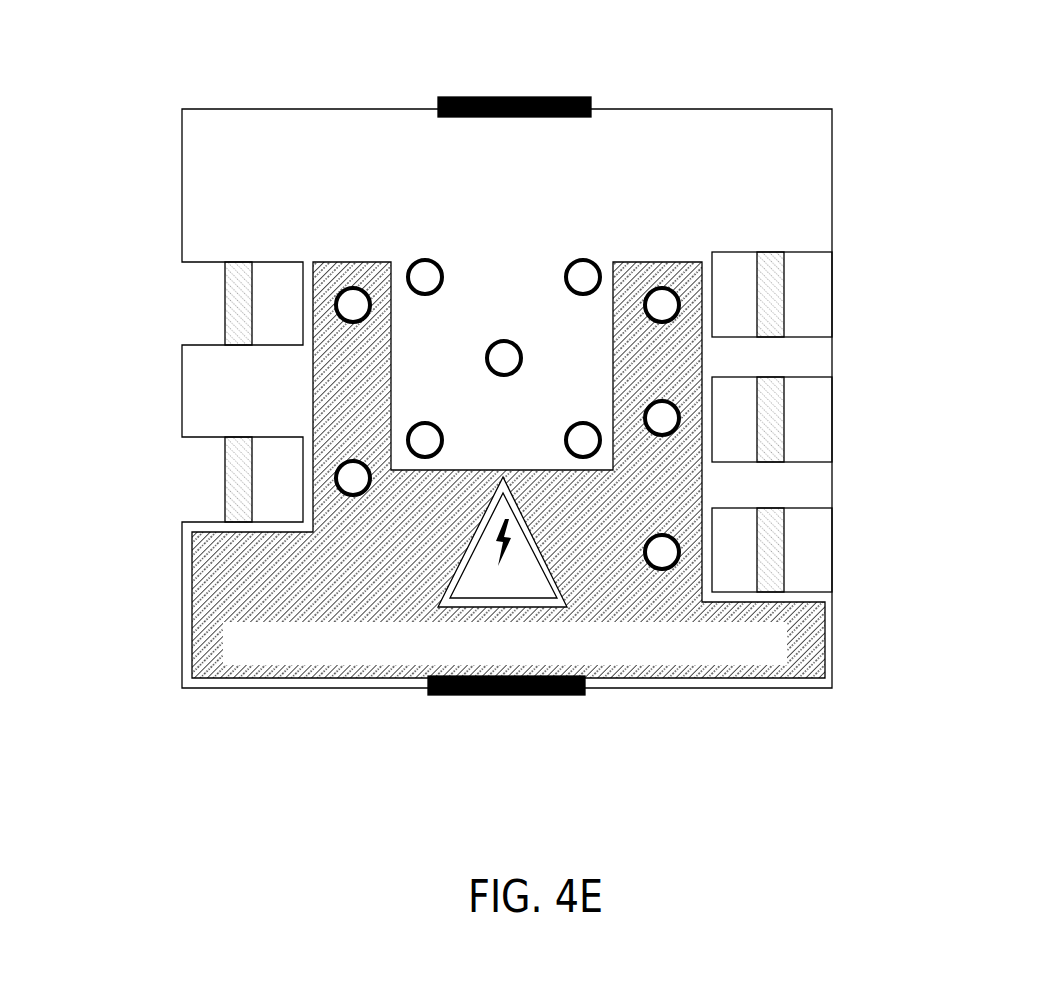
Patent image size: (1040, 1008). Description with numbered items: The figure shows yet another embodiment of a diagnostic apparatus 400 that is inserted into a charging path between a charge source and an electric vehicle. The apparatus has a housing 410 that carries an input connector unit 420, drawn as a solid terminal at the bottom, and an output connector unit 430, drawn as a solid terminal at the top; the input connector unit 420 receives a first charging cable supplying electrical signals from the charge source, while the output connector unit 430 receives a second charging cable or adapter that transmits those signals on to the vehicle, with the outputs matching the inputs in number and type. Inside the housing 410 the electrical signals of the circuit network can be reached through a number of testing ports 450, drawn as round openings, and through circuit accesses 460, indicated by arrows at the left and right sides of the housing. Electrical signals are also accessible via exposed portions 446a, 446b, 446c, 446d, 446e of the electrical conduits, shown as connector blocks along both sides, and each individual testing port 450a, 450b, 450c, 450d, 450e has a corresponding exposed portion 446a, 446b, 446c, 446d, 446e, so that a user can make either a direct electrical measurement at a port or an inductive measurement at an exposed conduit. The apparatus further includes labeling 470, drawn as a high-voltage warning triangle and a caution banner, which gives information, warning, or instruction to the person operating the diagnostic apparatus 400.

The diagnostic apparatus 400 is at (529, 406).
The housing 410 is at (812, 123).
The input connector unit 420 is at (510, 727).
The output connector unit 430 is at (518, 78).
The exposed portion 446a is at (225, 303).
The exposed portion 446b is at (225, 480).
The exposed portion 446c is at (785, 293).
The exposed portion 446d is at (785, 422).
The exposed portion 446e is at (785, 553).
The testing ports 450 is at (505, 330).
The testing port 450a is at (356, 306).
The testing port 450b is at (352, 478).
The testing port 450c is at (655, 305).
The testing port 450d is at (655, 420).
The testing port 450e is at (660, 548).
The circuit access 460 is at (529, 407).
The labeling 470 is at (450, 555).